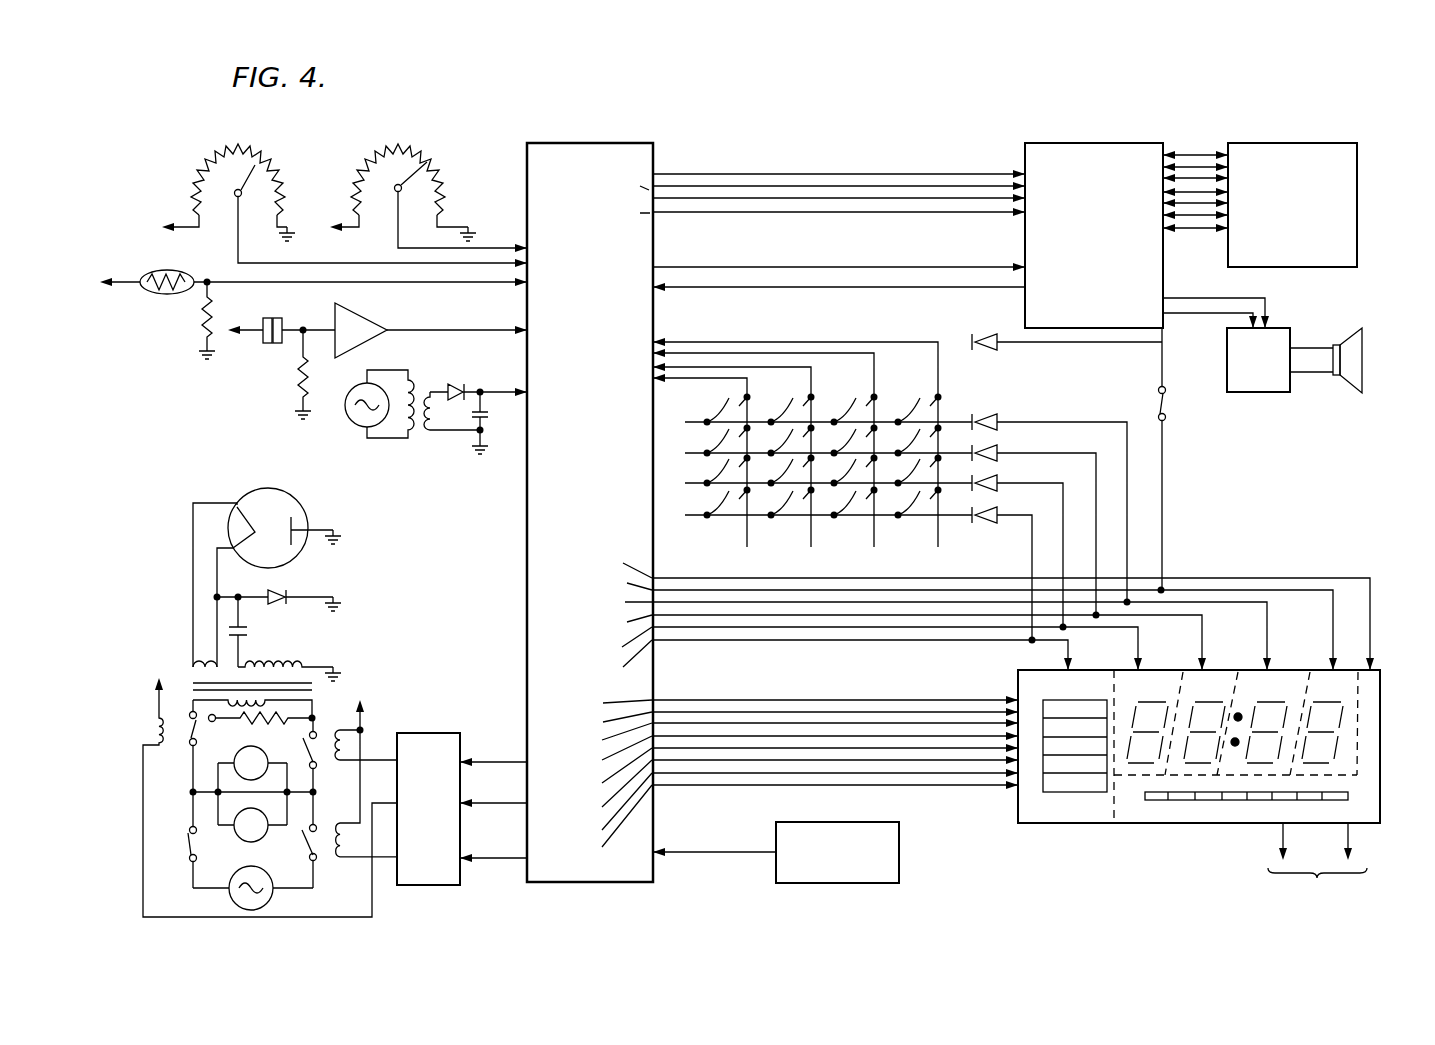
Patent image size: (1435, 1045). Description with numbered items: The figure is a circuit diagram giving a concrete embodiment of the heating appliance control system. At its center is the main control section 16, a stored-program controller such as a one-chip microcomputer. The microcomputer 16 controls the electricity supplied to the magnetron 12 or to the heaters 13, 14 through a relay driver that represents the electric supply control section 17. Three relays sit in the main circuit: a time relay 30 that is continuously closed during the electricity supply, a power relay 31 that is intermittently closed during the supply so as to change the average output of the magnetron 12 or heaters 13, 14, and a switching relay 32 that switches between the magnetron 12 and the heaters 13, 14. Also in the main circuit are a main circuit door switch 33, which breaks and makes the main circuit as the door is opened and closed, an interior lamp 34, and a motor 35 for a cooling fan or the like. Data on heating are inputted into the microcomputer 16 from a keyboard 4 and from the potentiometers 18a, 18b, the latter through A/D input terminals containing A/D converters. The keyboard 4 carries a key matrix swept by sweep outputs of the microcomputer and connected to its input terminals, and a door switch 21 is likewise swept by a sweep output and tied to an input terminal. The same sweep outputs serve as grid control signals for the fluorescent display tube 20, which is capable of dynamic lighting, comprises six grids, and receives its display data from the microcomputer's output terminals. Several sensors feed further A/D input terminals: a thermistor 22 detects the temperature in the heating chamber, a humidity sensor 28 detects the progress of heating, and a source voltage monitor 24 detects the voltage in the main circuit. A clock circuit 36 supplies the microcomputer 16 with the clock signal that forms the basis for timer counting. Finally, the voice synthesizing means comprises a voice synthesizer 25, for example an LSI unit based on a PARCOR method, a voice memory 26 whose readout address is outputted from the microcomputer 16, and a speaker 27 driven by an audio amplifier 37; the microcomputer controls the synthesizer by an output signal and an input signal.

The keyboard 4 is at (733, 528).
The magnetron 12 is at (280, 500).
The heater 13 is at (257, 727).
The heater 14 is at (245, 725).
The main control section 16 is at (612, 143).
The electric supply control section 17 is at (437, 733).
The potentiometer 18a is at (427, 153).
The potentiometer 18b is at (265, 153).
The fluorescent display tube 20 is at (1067, 823).
The door switch 21 is at (1160, 410).
The thermistor 22 is at (172, 289).
The source voltage monitor 24 is at (430, 433).
The voice synthesizer 25 is at (1128, 143).
The voice memory 26 is at (1302, 143).
The speaker 27 is at (1345, 380).
The humidity sensor 28 is at (263, 345).
The time relay 30 is at (305, 845).
The power relay 31 is at (320, 735).
The switching relay 32 is at (190, 737).
The main circuit door switch 33 is at (188, 847).
The interior lamp 34 is at (237, 837).
The motor 35 is at (263, 753).
The clock circuit 36 is at (900, 850).
The audio amplifier 37 is at (1268, 392).